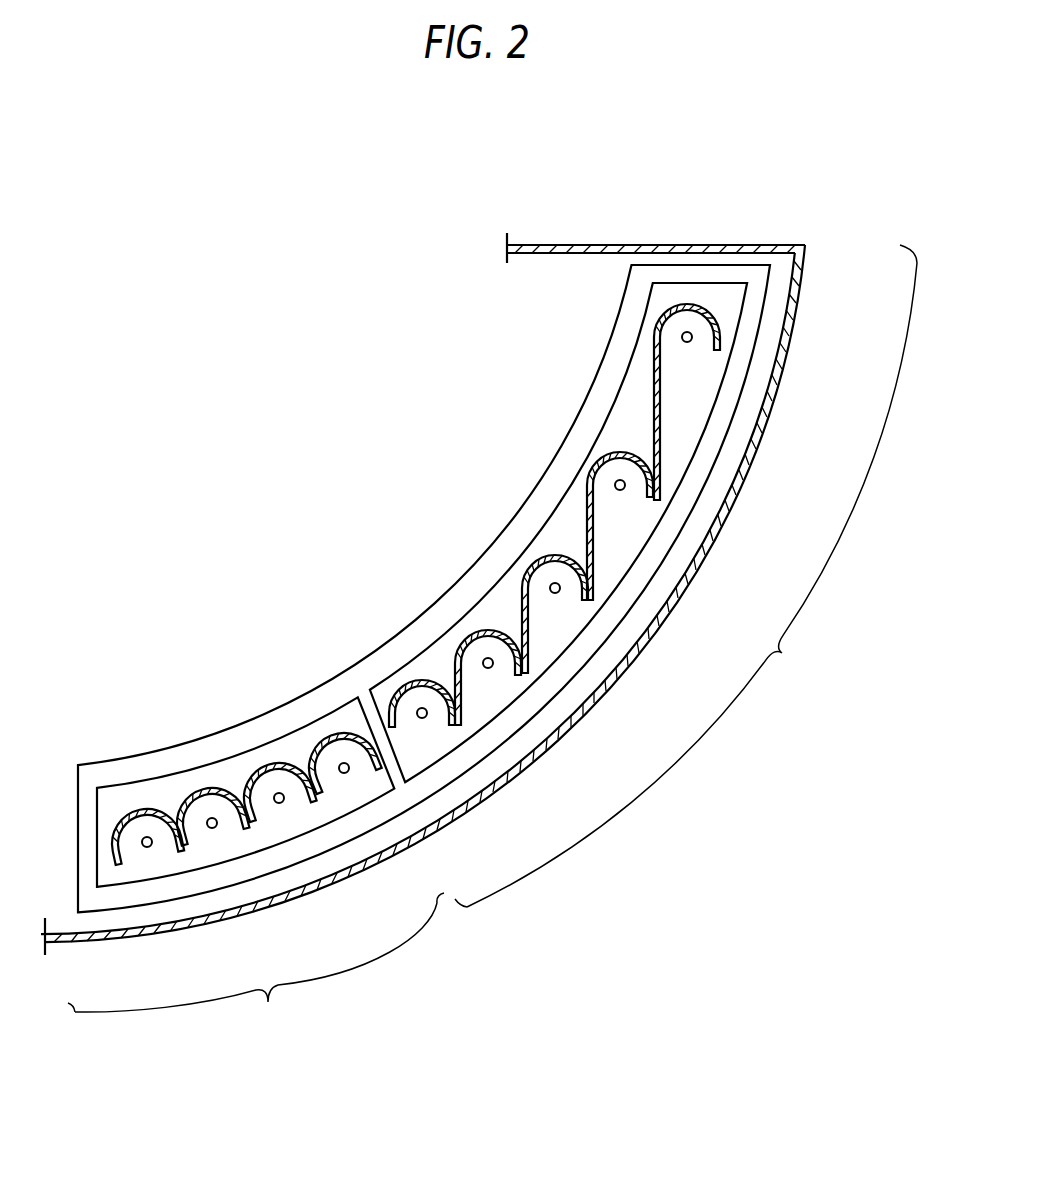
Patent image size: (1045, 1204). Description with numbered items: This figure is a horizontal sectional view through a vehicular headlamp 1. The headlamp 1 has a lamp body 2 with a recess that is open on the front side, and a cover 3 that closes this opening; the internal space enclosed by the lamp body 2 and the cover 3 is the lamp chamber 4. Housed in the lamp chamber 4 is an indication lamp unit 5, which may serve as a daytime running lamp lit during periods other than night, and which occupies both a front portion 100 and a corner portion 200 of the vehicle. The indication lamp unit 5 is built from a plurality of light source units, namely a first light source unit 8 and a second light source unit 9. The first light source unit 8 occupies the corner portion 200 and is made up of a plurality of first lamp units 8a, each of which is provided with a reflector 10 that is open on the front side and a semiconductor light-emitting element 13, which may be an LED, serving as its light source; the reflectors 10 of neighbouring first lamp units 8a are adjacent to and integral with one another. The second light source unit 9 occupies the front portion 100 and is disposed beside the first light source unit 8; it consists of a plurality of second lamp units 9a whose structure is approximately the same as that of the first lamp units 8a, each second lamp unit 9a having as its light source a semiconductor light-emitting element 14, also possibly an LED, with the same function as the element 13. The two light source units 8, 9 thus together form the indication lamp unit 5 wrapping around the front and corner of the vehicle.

The vehicular headlamp 1 is at (796, 204).
The lamp body 2 is at (797, 315).
The cover 3 is at (514, 778).
The lamp chamber 4 is at (590, 297).
The indication lamp unit 5 is at (404, 632).
The first light source unit 8 is at (552, 513).
The first lamp unit 8a is at (588, 482).
The second light source unit 9 is at (242, 724).
The second lamp unit 9a is at (203, 797).
The reflector 10 is at (618, 452).
The semiconductor light-emitting element 13 is at (424, 720).
The semiconductor light-emitting element 14 is at (146, 850).
The front portion 100 is at (256, 966).
The corner portion 200 is at (686, 576).